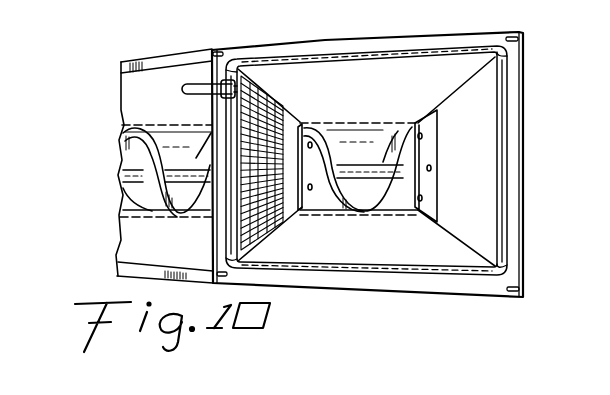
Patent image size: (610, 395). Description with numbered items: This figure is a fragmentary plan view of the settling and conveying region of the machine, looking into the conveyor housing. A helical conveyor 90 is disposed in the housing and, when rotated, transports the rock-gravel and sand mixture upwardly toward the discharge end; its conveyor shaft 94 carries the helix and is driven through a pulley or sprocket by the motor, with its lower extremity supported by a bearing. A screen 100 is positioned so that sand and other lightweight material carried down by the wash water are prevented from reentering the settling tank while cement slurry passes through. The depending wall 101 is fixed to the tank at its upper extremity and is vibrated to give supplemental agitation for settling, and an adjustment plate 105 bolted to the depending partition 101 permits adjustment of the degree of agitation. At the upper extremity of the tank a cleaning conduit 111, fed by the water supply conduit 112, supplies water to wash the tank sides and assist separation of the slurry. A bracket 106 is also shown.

The helical conveyor 90 is at (125, 222).
The conveyor shaft 94 is at (131, 196).
The screen 100 is at (266, 118).
The depending wall 101 is at (482, 172).
The adjustment plate 105 is at (425, 197).
The left bearing bracket 106 is at (310, 172).
The cleaning conduit 111 is at (503, 106).
The water supply conduit 112 is at (193, 92).